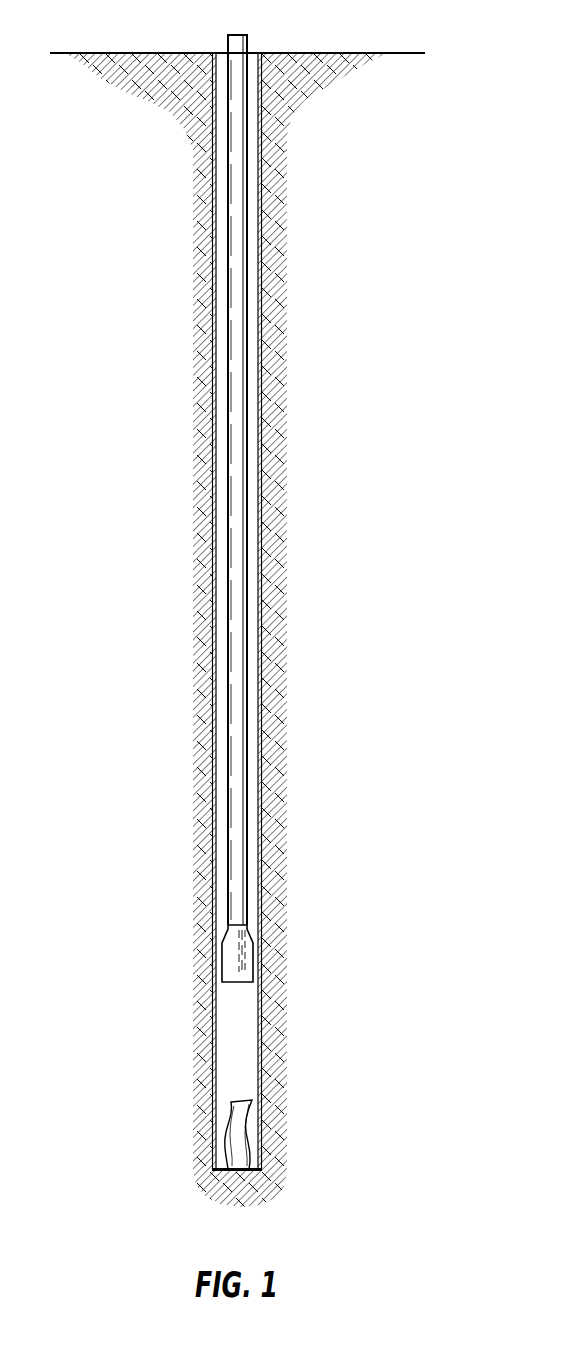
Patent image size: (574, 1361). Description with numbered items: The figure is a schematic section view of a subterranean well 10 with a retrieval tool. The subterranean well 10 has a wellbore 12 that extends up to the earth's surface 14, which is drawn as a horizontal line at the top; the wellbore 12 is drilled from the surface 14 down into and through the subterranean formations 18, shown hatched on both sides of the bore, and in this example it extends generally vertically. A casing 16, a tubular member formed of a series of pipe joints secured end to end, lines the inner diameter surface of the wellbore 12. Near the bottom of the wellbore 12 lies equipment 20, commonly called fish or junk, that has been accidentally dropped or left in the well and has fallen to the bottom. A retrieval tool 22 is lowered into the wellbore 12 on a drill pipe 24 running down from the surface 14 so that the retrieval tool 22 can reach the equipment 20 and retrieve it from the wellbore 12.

The subterranean well 10 is at (244, 615).
The wellbore 12 is at (253, 373).
The earth's surface 14 is at (380, 53).
The casing 16 is at (260, 818).
The formation 18 is at (263, 603).
The equipment 20 is at (248, 1135).
The retrieval tool 22 is at (247, 957).
The drill pipe 24 is at (233, 421).